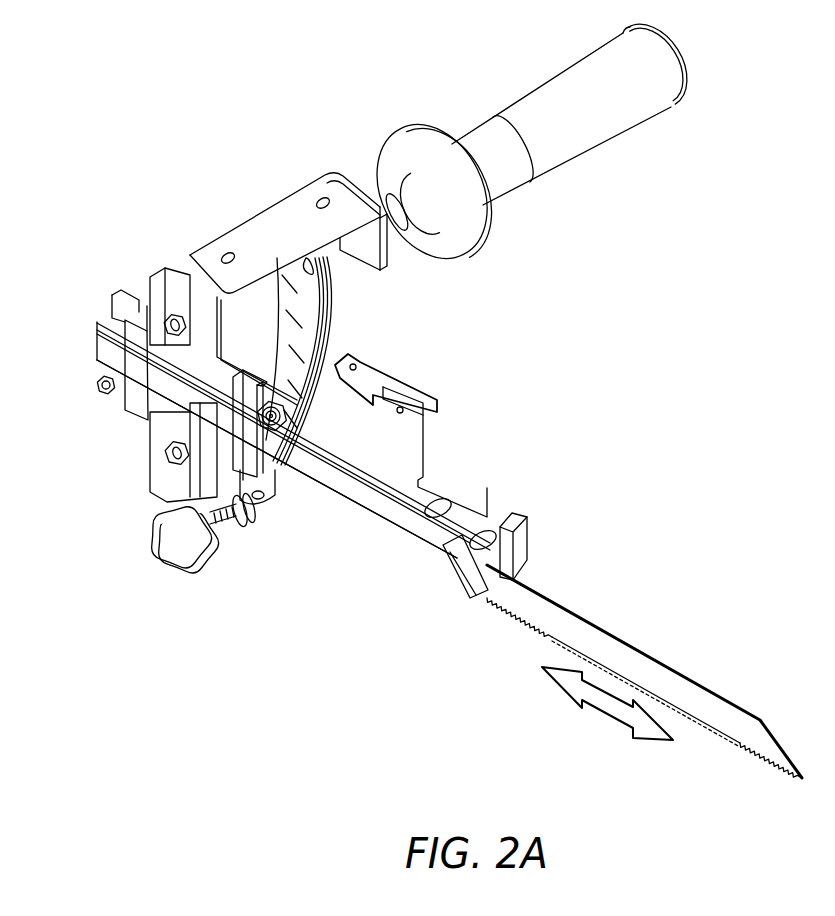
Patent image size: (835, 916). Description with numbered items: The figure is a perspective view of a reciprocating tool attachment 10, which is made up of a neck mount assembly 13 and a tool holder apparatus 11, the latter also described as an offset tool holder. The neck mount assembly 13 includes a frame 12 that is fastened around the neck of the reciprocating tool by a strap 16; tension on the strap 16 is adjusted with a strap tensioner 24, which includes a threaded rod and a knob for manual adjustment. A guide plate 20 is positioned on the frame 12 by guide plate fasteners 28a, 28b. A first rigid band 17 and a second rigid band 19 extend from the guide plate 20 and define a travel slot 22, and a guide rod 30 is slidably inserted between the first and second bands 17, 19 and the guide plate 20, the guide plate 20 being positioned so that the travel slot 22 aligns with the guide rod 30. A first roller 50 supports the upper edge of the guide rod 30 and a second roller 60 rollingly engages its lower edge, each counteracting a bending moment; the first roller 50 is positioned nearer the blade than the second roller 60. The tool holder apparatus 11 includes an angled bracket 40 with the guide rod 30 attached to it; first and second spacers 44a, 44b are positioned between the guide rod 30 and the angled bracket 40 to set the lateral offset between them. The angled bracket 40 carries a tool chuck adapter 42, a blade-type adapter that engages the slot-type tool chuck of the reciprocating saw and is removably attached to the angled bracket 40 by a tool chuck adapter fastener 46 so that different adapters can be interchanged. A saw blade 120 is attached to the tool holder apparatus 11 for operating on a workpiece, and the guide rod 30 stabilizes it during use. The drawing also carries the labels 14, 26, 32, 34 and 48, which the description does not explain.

The reciprocating tool attachment 10 is at (153, 132).
The tool holder apparatus 11 is at (630, 495).
The frame 12 is at (295, 205).
The neck mount assembly 13 is at (222, 203).
The handle 14 is at (568, 80).
The strap 16 is at (330, 328).
The first rigid band 17 is at (240, 420).
The second rigid band 19 is at (128, 352).
The guide plate 20 is at (137, 297).
The travel slot 22 is at (272, 465).
The strap tensioner 24 is at (167, 543).
The tab 26 is at (190, 280).
The guide plate fastener 28a is at (175, 315).
The guide plate fastener 28b is at (162, 448).
The guide rod 30 is at (398, 525).
The blade clamp 32 is at (435, 555).
The rail face 34 is at (100, 357).
The angled bracket 40 is at (457, 433).
The tool chuck adapter 42 is at (373, 373).
The first spacer 44a is at (480, 537).
The second spacer 44b is at (437, 505).
The tool chuck adapter fastener 46 is at (395, 412).
The slot 48 is at (252, 315).
The first roller 50 is at (278, 402).
The second roller 60 is at (118, 397).
The saw blade 120 is at (637, 645).